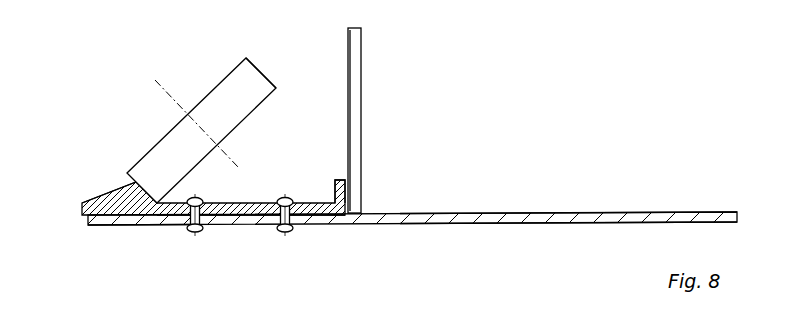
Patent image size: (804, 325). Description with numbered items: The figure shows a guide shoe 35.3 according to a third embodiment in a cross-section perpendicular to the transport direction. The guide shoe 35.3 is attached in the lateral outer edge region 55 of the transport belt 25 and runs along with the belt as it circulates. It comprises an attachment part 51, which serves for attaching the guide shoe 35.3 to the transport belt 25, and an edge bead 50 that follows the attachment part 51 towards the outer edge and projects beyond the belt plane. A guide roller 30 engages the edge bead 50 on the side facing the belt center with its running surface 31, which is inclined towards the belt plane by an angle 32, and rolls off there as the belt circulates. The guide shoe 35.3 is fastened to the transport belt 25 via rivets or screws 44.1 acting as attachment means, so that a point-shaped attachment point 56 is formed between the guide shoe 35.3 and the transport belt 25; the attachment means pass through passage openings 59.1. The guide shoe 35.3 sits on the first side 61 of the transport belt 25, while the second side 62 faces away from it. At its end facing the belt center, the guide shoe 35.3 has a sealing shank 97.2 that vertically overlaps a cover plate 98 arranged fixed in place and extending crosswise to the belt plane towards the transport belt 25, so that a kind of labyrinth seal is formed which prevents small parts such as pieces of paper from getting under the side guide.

The transport belt 25 is at (578, 213).
The guide roller 30 is at (253, 77).
The running surface 31 is at (257, 65).
The angle 32 is at (166, 90).
The guide shoe 35.3 is at (88, 181).
The rivets or screws 44.1 is at (199, 229).
The edge bead 50 is at (115, 193).
The attachment part 51 is at (325, 224).
The lateral outer edge region 55 is at (122, 243).
The point-shaped attachment point 56 is at (205, 199).
The passage opening 59.1 is at (184, 226).
The first side of transport belt 61 is at (482, 212).
The second side of transport belt 62 is at (483, 227).
The sealing shank 97.2 is at (338, 179).
The cover plate 98 is at (362, 104).